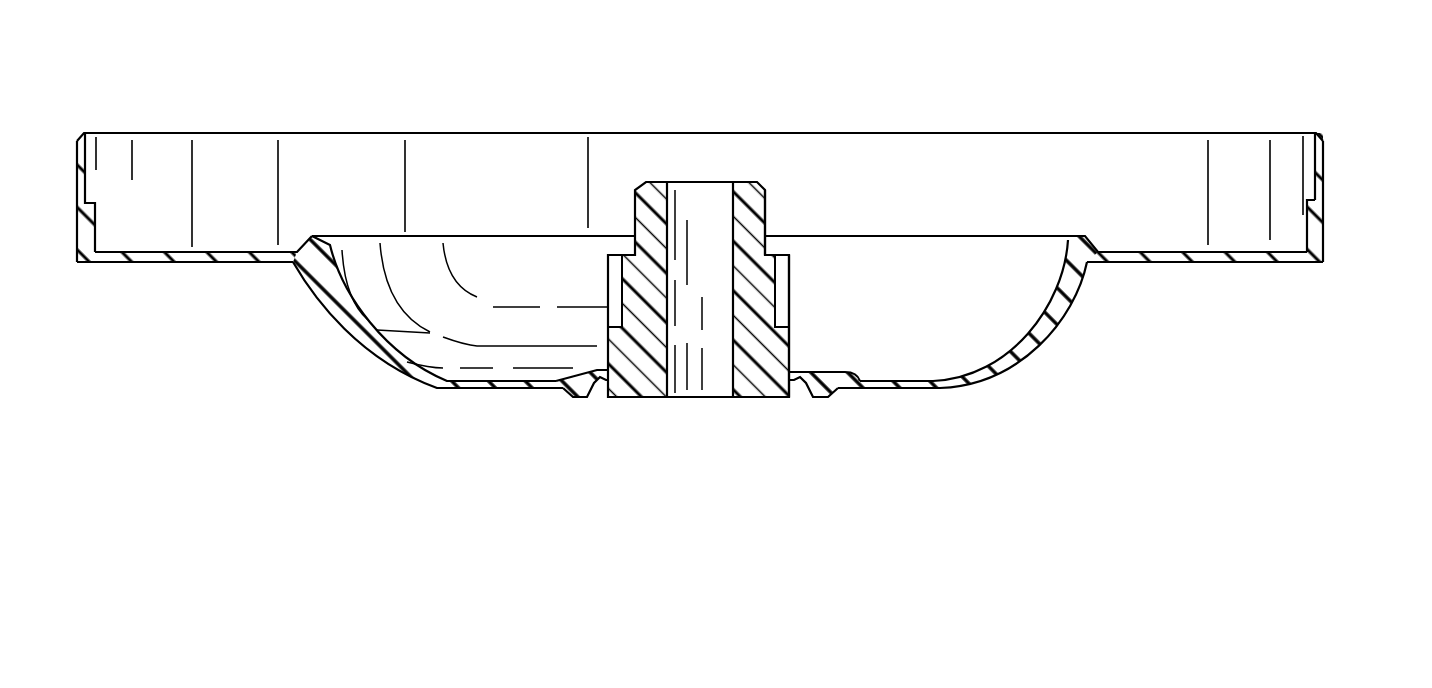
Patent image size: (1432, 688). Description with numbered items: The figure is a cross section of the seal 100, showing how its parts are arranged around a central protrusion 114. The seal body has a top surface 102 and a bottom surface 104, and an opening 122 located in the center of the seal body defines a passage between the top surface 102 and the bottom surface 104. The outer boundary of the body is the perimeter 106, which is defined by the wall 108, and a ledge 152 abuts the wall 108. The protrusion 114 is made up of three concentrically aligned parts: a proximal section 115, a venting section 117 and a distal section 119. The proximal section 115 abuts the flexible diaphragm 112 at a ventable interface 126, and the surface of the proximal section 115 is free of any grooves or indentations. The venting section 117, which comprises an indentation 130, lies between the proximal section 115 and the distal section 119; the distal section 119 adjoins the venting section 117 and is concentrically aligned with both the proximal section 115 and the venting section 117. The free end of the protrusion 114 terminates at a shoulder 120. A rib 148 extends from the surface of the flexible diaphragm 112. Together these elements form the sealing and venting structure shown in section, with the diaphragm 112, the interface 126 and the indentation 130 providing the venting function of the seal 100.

The fluid reservoir assembly 100 is at (338, 458).
The top surface 102 is at (925, 380).
The bottom surface 104 is at (1217, 263).
The perimeter 106 is at (1323, 228).
The wall 108 is at (1323, 160).
The flexible diaphragm 112 is at (513, 388).
The protrusion 114 is at (762, 155).
The proximal section 115 is at (812, 343).
The venting section 117 is at (822, 290).
The distal section 119 is at (785, 207).
The shoulder 120 is at (655, 182).
The opening 122 is at (668, 329).
The ventable interface 126 is at (605, 367).
The indentation 130 is at (778, 297).
The rib 148 is at (857, 377).
The ledge 152 is at (91, 205).